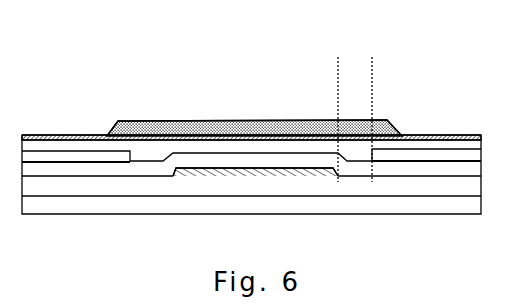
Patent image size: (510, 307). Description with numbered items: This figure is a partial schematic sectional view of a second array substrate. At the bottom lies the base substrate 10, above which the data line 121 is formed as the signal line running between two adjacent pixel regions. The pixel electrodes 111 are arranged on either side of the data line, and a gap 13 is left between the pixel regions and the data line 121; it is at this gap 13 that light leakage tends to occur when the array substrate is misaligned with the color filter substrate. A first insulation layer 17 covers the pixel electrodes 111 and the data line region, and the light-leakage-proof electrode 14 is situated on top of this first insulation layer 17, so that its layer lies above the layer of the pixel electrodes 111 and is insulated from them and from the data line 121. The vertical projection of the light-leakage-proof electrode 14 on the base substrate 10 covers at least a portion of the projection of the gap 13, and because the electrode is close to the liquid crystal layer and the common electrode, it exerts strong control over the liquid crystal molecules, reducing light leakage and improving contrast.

The base substrate 10 is at (38, 206).
The pixel electrodes 111 is at (88, 151).
The light-leakage-proof electrode 14 is at (185, 122).
The first insulation layer 17 is at (237, 152).
The data line 121 is at (276, 168).
The gap 13 is at (338, 57).